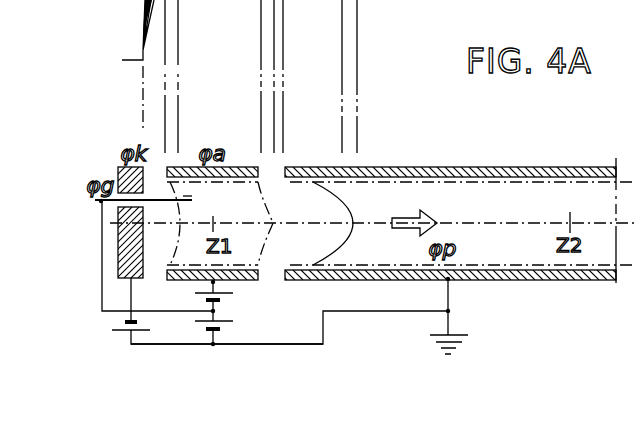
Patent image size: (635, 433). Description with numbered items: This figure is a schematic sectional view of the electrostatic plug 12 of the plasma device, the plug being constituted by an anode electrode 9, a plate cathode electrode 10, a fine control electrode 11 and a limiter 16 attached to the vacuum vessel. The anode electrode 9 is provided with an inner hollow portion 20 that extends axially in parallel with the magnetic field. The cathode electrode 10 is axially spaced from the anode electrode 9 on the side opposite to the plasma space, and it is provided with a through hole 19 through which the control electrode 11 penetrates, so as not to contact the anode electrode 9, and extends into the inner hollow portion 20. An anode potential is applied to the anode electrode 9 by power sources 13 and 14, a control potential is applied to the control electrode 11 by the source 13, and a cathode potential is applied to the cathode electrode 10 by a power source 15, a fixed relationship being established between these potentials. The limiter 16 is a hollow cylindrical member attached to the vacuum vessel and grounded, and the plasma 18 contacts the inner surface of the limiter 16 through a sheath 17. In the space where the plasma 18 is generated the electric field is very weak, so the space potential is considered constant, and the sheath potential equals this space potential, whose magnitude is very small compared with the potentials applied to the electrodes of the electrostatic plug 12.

The anode electrode 9 is at (243, 166).
The plate cathode electrode 10 is at (117, 165).
The fine control electrode 11 is at (185, 196).
The electrostatic plug 12 is at (171, 393).
The power source 13 is at (225, 327).
The power source 14 is at (225, 300).
The power source 15 is at (107, 324).
The limiter 16 is at (450, 165).
The sheath 17 is at (540, 180).
The plasma 18 is at (508, 252).
The through hole 19 is at (113, 207).
The inner hollow portion 20 is at (178, 258).